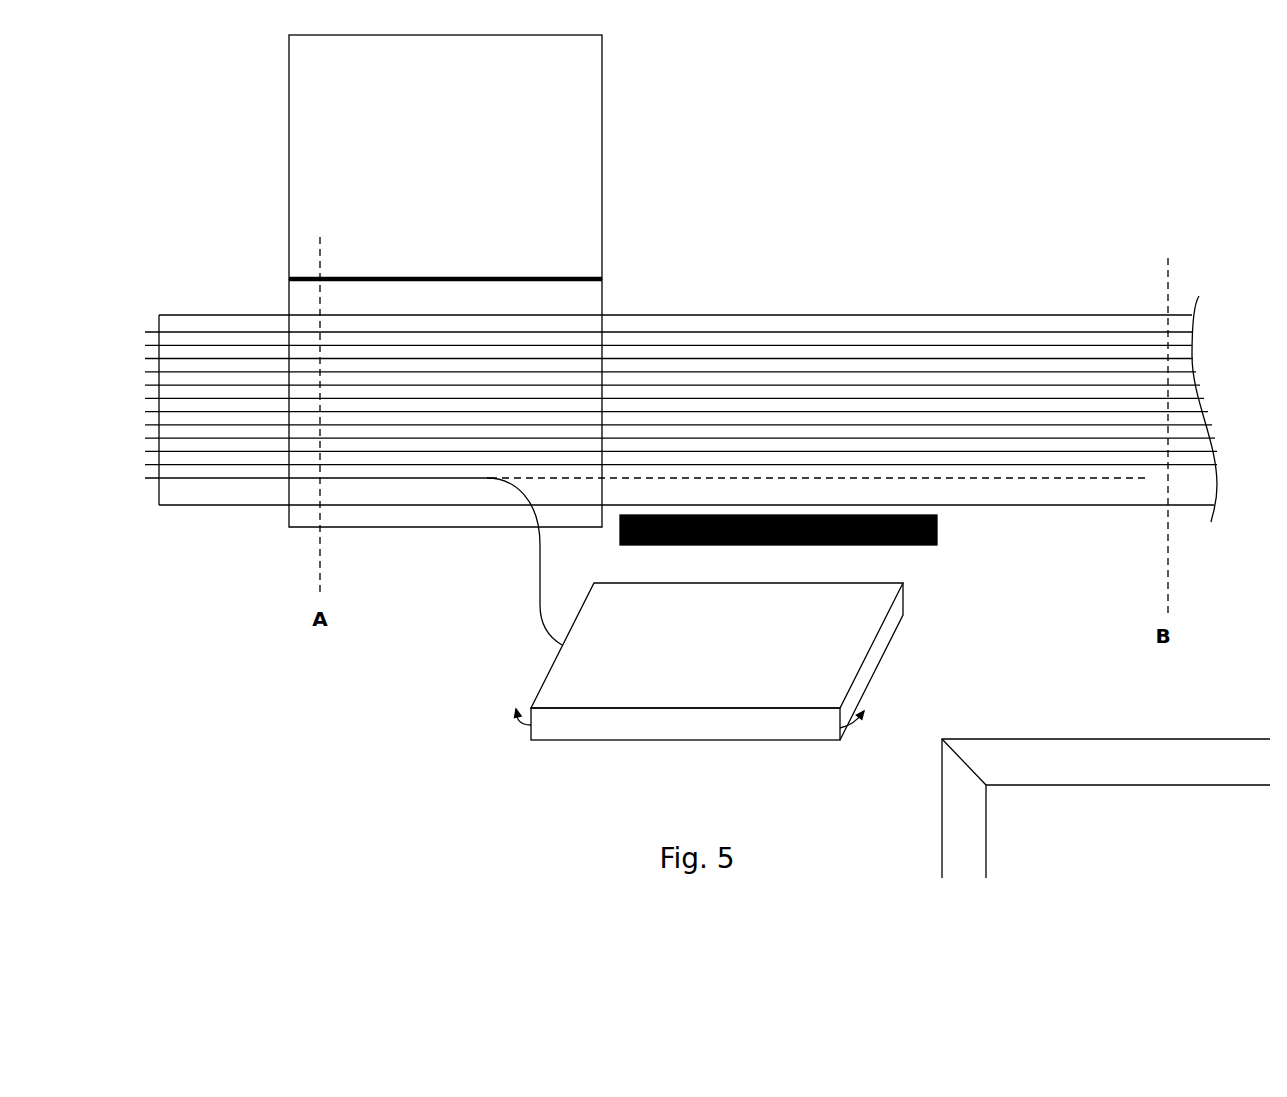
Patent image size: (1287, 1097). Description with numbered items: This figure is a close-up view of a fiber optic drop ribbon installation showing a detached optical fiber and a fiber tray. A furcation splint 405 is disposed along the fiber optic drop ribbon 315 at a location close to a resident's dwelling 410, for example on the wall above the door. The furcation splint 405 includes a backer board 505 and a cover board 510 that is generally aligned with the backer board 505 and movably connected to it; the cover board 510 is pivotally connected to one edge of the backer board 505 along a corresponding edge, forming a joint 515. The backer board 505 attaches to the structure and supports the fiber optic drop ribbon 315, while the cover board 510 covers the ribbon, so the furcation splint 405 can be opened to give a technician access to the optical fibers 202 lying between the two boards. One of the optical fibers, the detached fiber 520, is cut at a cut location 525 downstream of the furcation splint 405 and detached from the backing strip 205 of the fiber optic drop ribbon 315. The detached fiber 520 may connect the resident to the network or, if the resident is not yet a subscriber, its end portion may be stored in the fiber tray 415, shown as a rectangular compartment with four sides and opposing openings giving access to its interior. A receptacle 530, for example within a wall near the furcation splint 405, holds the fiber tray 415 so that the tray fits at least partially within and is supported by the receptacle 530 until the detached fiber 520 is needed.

The optical fibers 202 is at (1088, 425).
The backing strip 205 is at (730, 313).
The fiber optic drop ribbon 315 is at (681, 364).
The furcation splint 405 is at (455, 157).
The resident's dwelling 410 is at (1147, 805).
The fiber tray 415 is at (708, 661).
The backer board 505 is at (299, 515).
The cover board 510 is at (330, 128).
The joint 515 is at (567, 272).
The detached fiber 520 is at (525, 562).
The cut location 525 is at (1147, 487).
The receptacle 530 is at (925, 545).